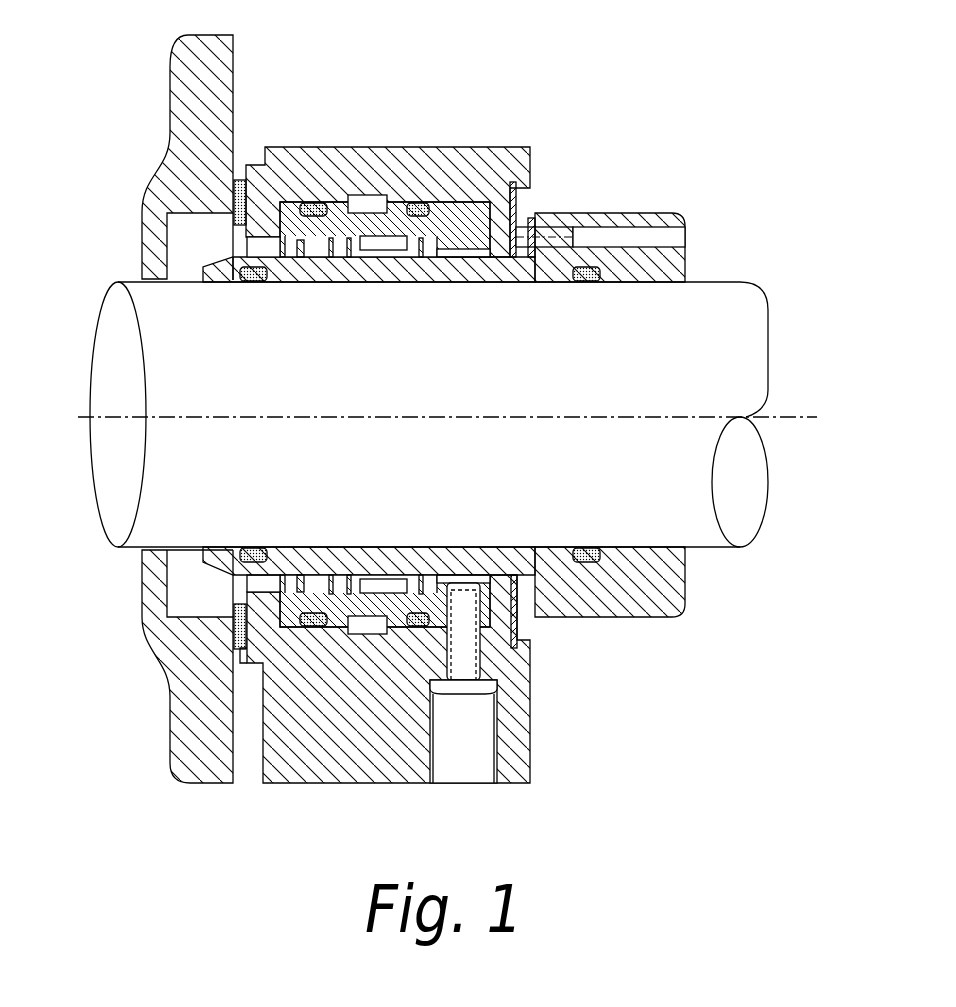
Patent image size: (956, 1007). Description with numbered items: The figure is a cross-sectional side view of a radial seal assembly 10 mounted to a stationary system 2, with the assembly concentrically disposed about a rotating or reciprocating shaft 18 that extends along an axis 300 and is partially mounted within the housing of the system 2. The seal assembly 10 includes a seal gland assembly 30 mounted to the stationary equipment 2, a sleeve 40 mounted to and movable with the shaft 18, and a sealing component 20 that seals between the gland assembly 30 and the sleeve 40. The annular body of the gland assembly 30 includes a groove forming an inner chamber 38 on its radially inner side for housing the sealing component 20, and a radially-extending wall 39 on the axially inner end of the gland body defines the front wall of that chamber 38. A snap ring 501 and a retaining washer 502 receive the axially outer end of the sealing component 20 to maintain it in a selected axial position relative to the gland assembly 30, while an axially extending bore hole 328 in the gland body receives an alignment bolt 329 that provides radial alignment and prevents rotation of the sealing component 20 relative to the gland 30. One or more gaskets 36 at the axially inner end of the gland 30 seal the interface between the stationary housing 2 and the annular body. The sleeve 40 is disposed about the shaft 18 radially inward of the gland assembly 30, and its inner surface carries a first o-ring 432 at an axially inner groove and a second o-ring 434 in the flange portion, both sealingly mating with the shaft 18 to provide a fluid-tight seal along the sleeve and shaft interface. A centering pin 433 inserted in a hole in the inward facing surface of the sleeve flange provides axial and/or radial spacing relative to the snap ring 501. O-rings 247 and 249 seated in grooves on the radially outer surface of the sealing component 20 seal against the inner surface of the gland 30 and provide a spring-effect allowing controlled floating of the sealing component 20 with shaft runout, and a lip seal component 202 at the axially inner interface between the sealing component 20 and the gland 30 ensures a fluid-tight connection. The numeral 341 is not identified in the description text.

The system 2 is at (237, 70).
The seal assembly 10 is at (530, 80).
The shaft 18 is at (421, 385).
The sealing component 20 is at (448, 228).
The seal gland assembly 30 is at (353, 147).
The gasket 36 is at (237, 178).
The inner chamber 38 is at (463, 200).
The radially-extending wall 39 is at (260, 227).
The sleeve 40 is at (687, 267).
The lip seal component 202 is at (281, 620).
The o-ring 247 is at (318, 202).
The o-ring 249 is at (418, 202).
The axis 300 is at (748, 417).
The bore hole 328 is at (472, 770).
The alignment bolt 329 is at (456, 695).
The gap 341 is at (234, 258).
The o-ring 432 is at (250, 282).
The centering pin 433 is at (534, 215).
The o-ring 434 is at (626, 232).
The snap ring 501 is at (519, 652).
The retaining washer 502 is at (499, 683).